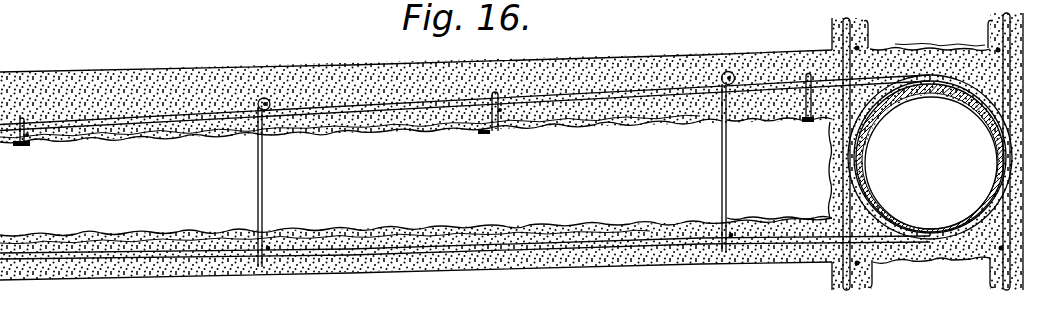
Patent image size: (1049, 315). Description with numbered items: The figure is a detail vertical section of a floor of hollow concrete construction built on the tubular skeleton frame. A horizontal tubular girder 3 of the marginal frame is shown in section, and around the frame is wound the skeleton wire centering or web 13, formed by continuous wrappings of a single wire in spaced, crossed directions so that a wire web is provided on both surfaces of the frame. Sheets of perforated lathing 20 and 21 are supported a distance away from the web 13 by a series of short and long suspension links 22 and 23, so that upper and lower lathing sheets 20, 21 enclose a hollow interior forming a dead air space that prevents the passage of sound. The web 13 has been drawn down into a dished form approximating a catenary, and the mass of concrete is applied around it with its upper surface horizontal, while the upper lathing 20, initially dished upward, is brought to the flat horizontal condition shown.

The horizontal tubular girder 3 is at (930, 158).
The skeleton wire centering or web 13 is at (368, 100).
The upper perforated lathing sheet 20 is at (358, 130).
The lower perforated lathing sheet 21 is at (383, 233).
The short suspension link 22 is at (22, 118).
The long suspension link 23 is at (262, 180).